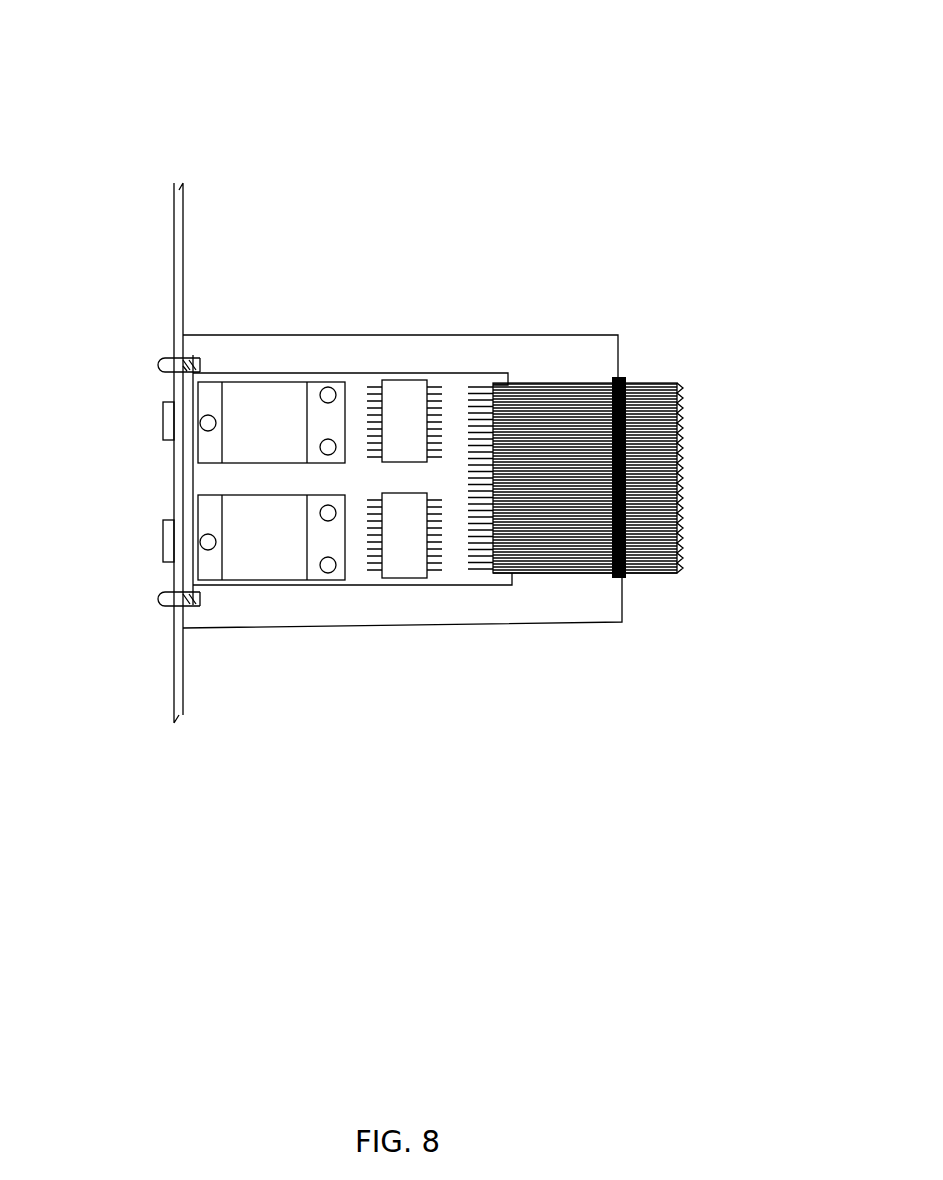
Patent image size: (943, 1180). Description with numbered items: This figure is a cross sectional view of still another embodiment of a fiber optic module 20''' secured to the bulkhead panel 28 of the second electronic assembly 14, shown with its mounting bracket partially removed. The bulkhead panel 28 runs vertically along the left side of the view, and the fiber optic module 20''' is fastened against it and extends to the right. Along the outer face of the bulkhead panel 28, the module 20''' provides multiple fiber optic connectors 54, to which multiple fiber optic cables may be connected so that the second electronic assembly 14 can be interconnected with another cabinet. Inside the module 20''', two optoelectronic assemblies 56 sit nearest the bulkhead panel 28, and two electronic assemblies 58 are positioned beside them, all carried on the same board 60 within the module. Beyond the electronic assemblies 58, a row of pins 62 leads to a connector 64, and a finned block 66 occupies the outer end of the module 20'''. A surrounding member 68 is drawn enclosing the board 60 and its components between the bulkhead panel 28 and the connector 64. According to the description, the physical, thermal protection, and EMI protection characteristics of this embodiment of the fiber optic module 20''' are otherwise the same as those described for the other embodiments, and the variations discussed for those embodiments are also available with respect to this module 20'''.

The second electronic assembly 14 is at (96, 73).
The fiber optic module 20''' is at (498, 402).
The bulkhead panel 28 is at (182, 255).
The fiber optic connectors 54 is at (160, 418).
The optoelectronic assemblies 56 is at (316, 389).
The electronic assemblies 58 is at (410, 388).
The printed circuit board 60 is at (458, 378).
The connector pins 62 is at (482, 383).
The connector 64 is at (627, 377).
The heat sink 66 is at (690, 432).
The mounting bracket 68 is at (558, 622).